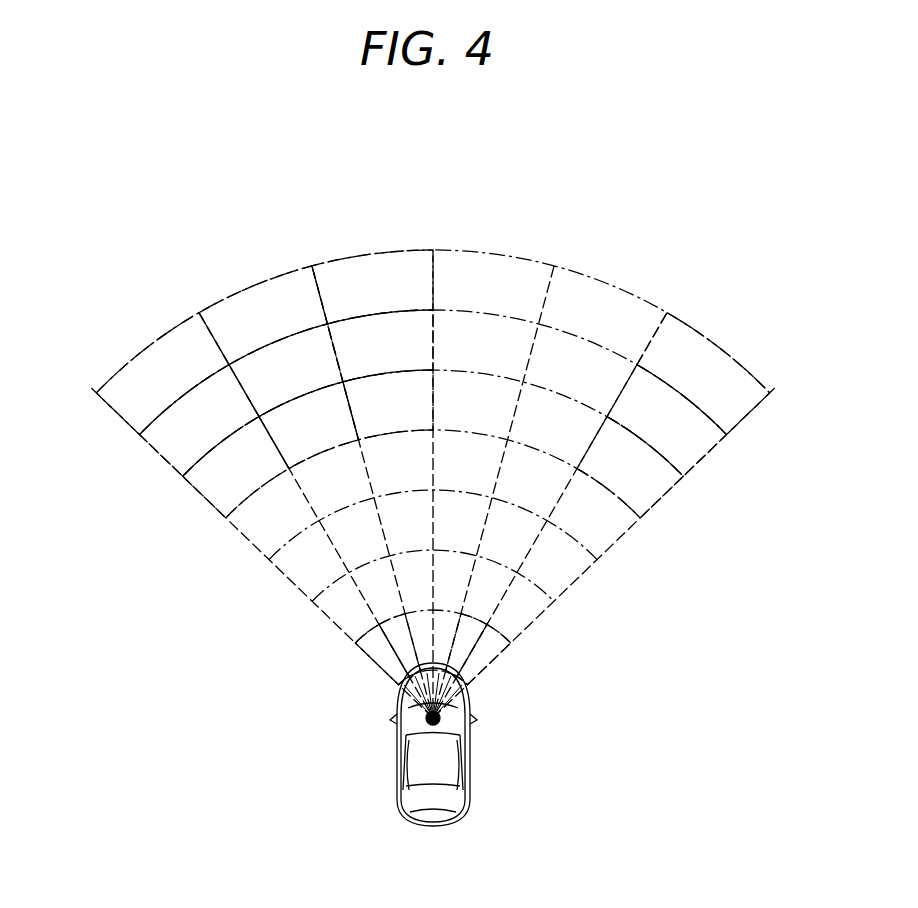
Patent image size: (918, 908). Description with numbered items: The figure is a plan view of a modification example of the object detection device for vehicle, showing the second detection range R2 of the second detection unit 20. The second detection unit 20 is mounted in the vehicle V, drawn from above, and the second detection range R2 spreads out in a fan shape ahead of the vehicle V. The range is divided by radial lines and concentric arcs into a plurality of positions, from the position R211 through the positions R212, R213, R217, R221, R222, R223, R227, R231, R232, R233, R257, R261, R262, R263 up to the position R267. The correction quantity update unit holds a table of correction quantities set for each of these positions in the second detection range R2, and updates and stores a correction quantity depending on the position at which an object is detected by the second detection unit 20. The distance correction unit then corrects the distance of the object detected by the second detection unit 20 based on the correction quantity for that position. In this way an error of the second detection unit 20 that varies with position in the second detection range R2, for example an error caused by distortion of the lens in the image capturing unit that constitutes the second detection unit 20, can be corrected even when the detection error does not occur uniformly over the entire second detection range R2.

The second detection range R2 is at (638, 283).
The position R211 is at (128, 403).
The position R212 is at (173, 443).
The position R213 is at (217, 485).
The position R217 is at (382, 658).
The position R221 is at (265, 312).
The position R222 is at (268, 378).
The position R223 is at (305, 436).
The position R227 is at (395, 633).
The position R231 is at (366, 288).
The position R232 is at (388, 345).
The position R233 is at (413, 400).
The position R257 is at (470, 633).
The position R261 is at (738, 400).
The position R262 is at (697, 440).
The position R263 is at (652, 483).
The position R267 is at (487, 658).
The second detection unit 20 is at (433, 732).
The vehicle V is at (489, 806).